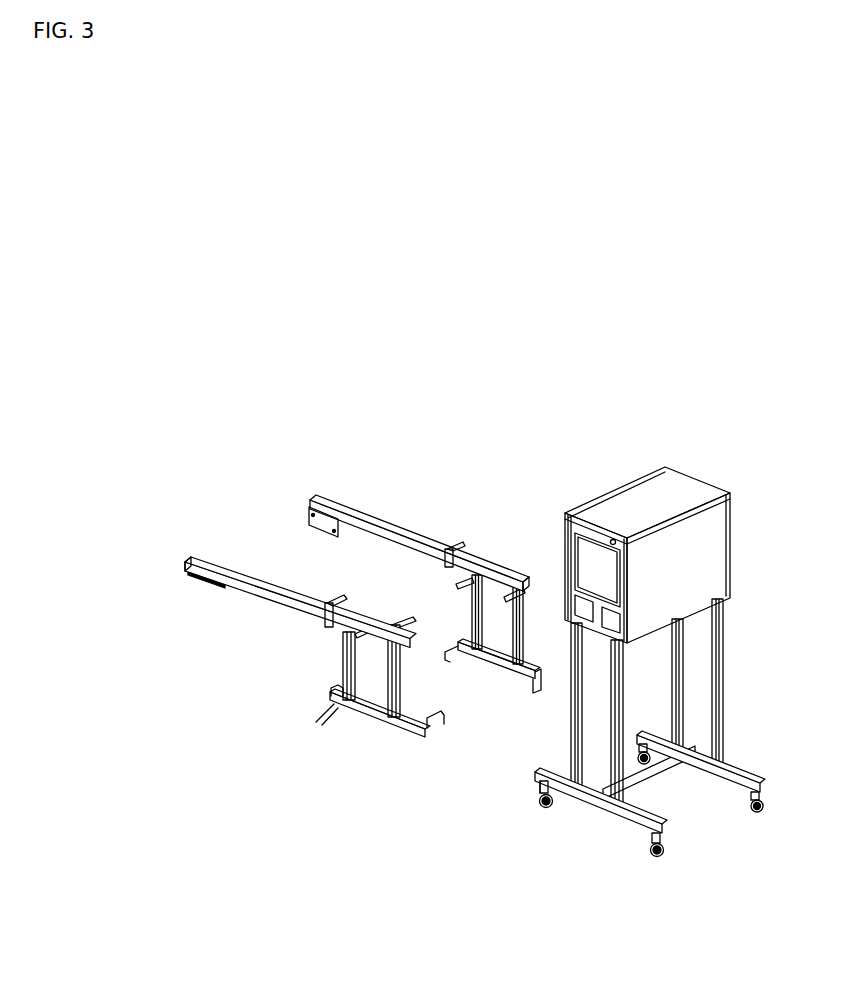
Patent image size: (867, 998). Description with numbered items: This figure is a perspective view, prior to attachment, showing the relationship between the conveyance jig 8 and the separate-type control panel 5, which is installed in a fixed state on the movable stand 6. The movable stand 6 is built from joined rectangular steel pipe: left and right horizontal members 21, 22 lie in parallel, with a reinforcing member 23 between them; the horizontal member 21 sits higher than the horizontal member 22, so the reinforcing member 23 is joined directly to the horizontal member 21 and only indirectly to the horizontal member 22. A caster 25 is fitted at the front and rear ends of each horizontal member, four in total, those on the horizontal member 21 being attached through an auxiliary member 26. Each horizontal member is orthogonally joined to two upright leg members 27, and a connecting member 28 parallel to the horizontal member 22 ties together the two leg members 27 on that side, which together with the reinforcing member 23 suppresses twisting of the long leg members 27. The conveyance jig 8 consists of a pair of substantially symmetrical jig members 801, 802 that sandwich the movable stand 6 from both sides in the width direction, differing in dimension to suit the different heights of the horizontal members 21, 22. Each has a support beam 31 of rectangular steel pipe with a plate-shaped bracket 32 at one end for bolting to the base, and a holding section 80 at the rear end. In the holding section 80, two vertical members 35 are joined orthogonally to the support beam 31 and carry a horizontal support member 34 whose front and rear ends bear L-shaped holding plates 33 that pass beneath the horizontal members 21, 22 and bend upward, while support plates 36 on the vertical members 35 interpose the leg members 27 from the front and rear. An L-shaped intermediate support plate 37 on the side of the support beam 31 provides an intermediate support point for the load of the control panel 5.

The control panel 5 is at (685, 492).
The movable stand 6 is at (648, 876).
The conveyance jig 8 is at (290, 443).
The jig member 801 is at (186, 555).
The jig member 802 is at (316, 508).
The horizontal member 21 is at (600, 806).
The horizontal member 22 is at (695, 776).
The reinforcing member 23 is at (652, 790).
The caster 25 is at (758, 814).
The auxiliary member 26 is at (537, 790).
The leg member 27 is at (683, 665).
The connecting member 28 is at (695, 742).
The support beam 31 is at (256, 598).
The bracket 32 is at (200, 578).
The holding plate 33 is at (438, 724).
The support member 34 is at (366, 712).
The vertical member 35 is at (390, 670).
The support plate 36 is at (403, 620).
The intermediate support plate 37 is at (326, 604).
The holding section 80 is at (332, 703).